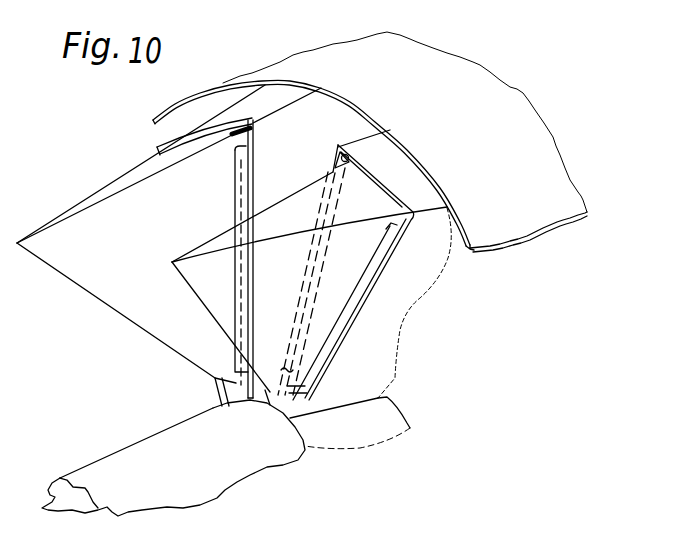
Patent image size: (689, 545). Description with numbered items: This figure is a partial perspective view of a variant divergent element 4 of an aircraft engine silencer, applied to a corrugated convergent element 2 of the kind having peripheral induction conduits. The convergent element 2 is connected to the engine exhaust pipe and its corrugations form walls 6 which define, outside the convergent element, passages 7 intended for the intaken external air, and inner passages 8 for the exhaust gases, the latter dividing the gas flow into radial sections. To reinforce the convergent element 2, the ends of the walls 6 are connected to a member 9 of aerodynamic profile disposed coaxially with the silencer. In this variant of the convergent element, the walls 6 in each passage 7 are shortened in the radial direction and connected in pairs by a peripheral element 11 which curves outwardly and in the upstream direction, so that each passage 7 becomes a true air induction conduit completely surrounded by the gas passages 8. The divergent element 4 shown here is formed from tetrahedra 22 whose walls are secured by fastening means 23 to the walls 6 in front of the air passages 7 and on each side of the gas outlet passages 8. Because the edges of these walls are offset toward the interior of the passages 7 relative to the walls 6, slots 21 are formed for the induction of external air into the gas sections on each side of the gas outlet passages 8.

The convergent element 2 is at (517, 125).
The divergent element 4 is at (141, 234).
The walls 6 is at (398, 307).
The passages 7 is at (338, 243).
The inner passages 8 is at (273, 132).
The member of aerodynamic profile 9 is at (152, 467).
The peripheral element 11 is at (413, 181).
The slots 21 is at (338, 312).
The tetrahedra 22 is at (223, 242).
The fastening means 23 is at (307, 393).